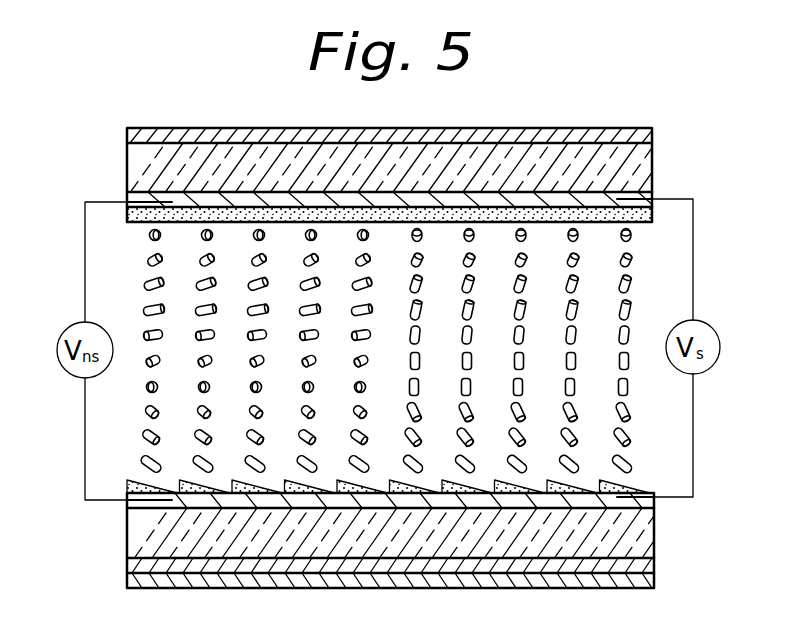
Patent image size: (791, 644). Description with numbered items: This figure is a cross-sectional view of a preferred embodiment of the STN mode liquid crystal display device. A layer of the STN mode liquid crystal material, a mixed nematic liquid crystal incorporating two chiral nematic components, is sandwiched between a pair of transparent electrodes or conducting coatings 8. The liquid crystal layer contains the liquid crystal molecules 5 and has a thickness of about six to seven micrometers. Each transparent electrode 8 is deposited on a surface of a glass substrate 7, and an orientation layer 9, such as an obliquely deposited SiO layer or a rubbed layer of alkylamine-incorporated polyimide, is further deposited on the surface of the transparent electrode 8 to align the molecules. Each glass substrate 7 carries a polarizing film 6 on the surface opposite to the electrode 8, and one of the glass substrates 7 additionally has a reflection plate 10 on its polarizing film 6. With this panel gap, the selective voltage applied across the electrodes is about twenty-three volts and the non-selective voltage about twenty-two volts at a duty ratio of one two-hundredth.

The liquid crystal molecules 5 is at (625, 283).
The polarizing film 6 is at (653, 133).
The glass substrate 7 is at (635, 168).
The transparent electrode 8 is at (178, 204).
The orientation layer 9 is at (140, 215).
The reflection plate 10 is at (128, 578).